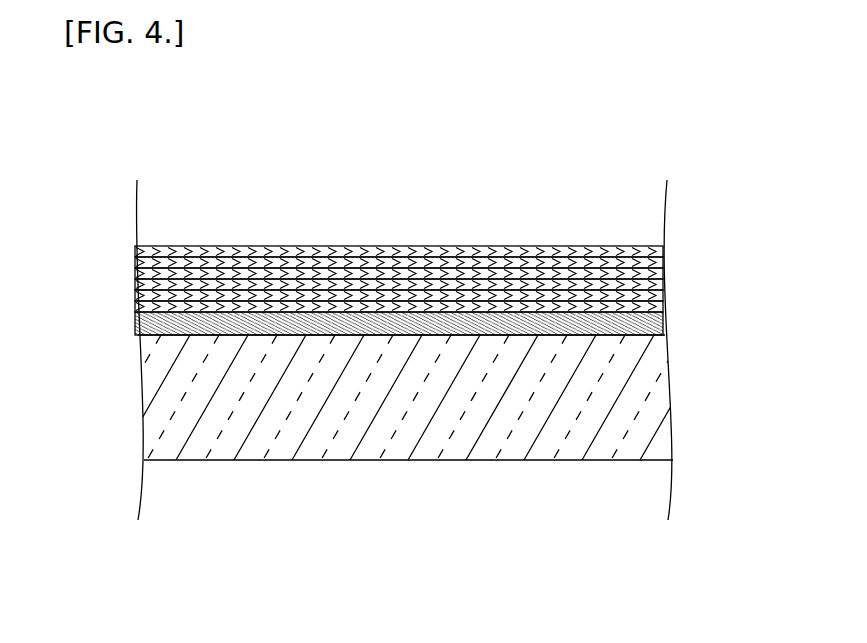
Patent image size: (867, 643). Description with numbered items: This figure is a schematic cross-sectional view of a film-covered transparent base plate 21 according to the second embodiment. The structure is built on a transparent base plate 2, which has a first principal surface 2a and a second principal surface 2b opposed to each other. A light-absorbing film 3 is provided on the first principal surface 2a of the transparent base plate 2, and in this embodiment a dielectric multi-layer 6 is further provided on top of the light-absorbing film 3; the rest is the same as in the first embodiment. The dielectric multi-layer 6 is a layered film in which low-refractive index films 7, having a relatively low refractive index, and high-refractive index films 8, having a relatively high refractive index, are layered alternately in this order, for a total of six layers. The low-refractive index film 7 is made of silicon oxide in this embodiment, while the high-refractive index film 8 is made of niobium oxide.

The film-covered transparent base plate 21 is at (160, 128).
The transparent base plate 2 is at (647, 399).
The first principal surface 2a is at (555, 333).
The second principal surface 2b is at (230, 462).
The light-absorbing film 3 is at (147, 321).
The dielectric multi-layer 6 is at (712, 213).
The low-refractive index film 7 is at (663, 262).
The high-refractive index film 8 is at (663, 251).